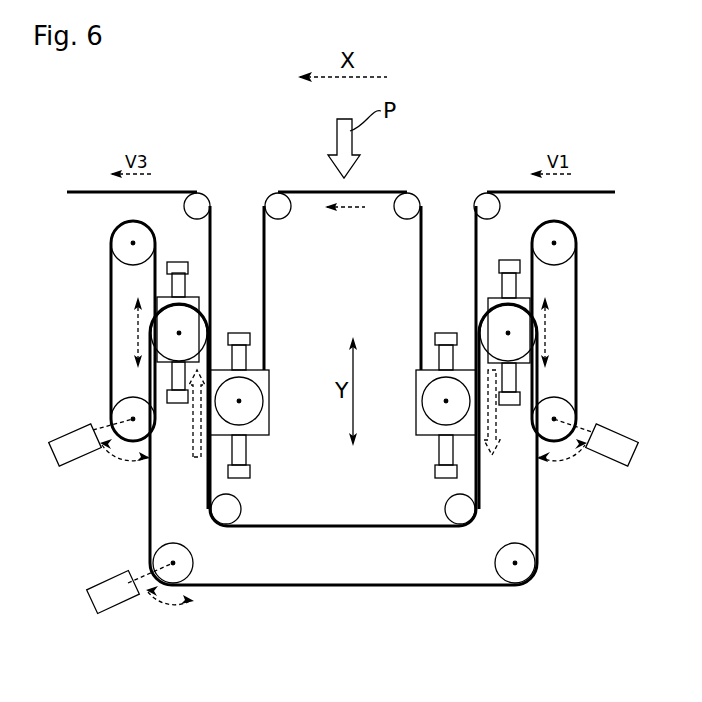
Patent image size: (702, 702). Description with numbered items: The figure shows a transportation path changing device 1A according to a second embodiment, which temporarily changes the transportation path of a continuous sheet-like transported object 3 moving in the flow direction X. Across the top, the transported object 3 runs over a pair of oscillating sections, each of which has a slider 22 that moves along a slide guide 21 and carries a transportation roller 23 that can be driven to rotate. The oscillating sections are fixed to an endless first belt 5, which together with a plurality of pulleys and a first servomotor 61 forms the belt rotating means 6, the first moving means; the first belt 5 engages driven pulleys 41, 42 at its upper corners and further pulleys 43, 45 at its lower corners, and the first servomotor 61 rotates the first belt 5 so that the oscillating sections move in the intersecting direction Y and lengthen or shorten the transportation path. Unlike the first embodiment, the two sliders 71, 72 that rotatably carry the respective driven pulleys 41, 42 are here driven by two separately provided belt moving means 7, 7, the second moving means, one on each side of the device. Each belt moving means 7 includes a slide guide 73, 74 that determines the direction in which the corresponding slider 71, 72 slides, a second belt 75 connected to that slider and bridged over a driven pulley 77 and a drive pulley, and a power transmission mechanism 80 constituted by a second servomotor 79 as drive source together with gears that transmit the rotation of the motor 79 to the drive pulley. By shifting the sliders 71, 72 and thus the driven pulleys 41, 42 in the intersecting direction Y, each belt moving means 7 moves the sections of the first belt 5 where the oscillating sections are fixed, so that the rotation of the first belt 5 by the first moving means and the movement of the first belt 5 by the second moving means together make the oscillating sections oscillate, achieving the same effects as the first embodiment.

The transportation path changing device 1A is at (457, 129).
The transported object 3 is at (383, 191).
The first belt 5 is at (360, 587).
The belt rotating means 6 is at (425, 587).
The belt moving means 7 is at (343, 328).
The slide guide 21 is at (244, 358).
The slider 22 is at (269, 390).
The transportation roller 23 is at (255, 401).
The driven pulley 41 is at (500, 330).
The driven pulley 42 is at (185, 328).
The pulley 43 is at (183, 568).
The pulley 45 is at (530, 565).
The first servomotor 61 is at (112, 590).
The slider 71 is at (490, 320).
The slider 72 is at (199, 318).
The slide guide 73 is at (505, 284).
The slide guide 74 is at (182, 286).
The second belt 75 is at (111, 313).
The driven pulley 77 is at (124, 238).
The second servomotor 79 is at (72, 436).
The power transmission mechanism 80 is at (125, 410).